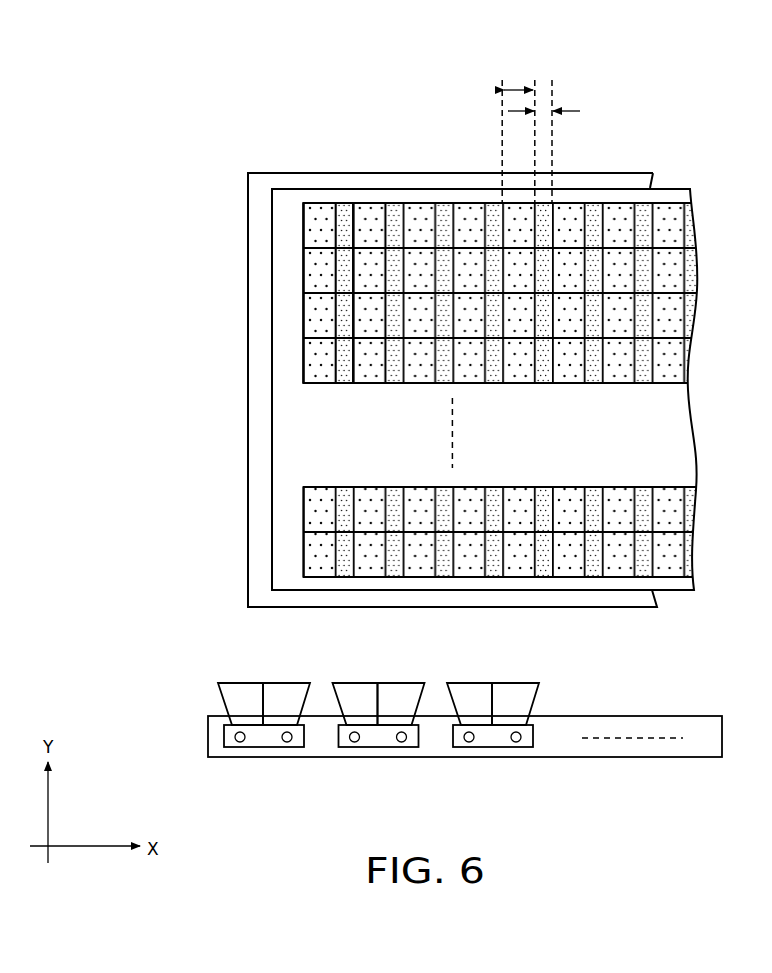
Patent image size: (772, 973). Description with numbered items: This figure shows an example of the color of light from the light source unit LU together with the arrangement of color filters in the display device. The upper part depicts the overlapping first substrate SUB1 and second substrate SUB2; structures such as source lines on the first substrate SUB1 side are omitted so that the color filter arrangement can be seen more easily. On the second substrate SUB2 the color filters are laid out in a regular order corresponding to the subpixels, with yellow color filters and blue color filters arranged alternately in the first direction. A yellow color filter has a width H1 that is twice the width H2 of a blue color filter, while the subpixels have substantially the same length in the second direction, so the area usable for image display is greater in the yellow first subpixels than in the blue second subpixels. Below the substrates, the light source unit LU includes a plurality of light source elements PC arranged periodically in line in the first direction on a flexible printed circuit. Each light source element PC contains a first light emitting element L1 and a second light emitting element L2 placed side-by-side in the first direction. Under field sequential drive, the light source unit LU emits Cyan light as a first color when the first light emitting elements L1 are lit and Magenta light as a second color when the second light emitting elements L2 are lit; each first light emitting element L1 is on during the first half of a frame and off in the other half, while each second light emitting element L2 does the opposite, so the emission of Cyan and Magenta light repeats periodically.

The first substrate SUB1 is at (594, 172).
The second substrate SUB2 is at (670, 188).
The width of yellow color filter H1 is at (522, 87).
The width of blue color filter H2 is at (545, 108).
The light source unit LU is at (205, 735).
The light source element PC is at (222, 749).
The first light emitting element L1 is at (240, 742).
The second light emitting element L2 is at (287, 742).
The cyan light Cyan is at (247, 693).
The magenta light Magenta is at (283, 693).